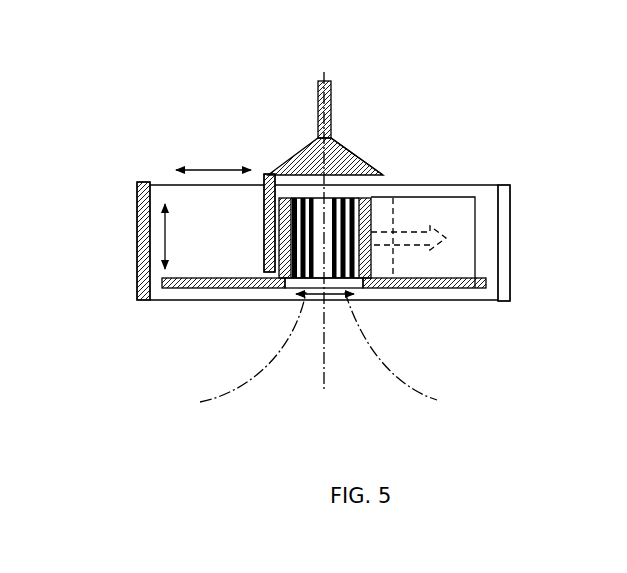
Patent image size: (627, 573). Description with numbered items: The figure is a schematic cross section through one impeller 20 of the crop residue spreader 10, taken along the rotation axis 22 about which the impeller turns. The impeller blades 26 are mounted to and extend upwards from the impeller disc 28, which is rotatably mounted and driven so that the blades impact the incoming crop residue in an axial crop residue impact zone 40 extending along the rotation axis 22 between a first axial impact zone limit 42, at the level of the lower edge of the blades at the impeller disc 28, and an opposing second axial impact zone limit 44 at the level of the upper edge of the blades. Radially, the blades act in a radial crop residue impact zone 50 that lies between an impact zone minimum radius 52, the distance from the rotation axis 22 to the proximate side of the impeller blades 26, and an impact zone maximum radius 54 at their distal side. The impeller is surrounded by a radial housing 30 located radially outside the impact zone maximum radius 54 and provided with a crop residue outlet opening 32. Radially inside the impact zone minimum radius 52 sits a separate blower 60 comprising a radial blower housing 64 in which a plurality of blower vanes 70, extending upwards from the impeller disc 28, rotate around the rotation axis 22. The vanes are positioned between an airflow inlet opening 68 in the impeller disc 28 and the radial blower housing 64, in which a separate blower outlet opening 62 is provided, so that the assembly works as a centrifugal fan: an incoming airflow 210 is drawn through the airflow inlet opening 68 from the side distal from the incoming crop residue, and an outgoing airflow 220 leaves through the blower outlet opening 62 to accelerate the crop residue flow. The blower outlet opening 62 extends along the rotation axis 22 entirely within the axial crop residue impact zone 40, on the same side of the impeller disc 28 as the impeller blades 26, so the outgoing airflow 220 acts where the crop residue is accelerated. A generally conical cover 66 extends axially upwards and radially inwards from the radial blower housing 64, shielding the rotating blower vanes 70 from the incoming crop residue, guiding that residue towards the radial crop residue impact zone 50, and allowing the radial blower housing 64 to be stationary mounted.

The crop residue spreader 10 is at (443, 124).
The impeller 20 is at (192, 291).
The rotation axis 22 is at (327, 376).
The impeller blade 26 is at (467, 266).
The impeller disc 28 is at (255, 290).
The radial housing 30 is at (499, 177).
The crop residue outlet opening 32 is at (519, 235).
The axial crop residue impact zone 40 is at (163, 228).
The first axial impact zone limit 42 is at (156, 278).
The second axial impact zone limit 44 is at (156, 203).
The radial crop residue impact zone 50 is at (227, 168).
The impact zone minimum radius 52 is at (252, 161).
The impact zone maximum radius 54 is at (175, 161).
The blower 60 is at (347, 131).
The blower outlet opening 62 is at (405, 216).
The radial blower housing 64 is at (273, 185).
The cover 66 is at (355, 160).
The airflow inlet opening 68 is at (310, 294).
The blower vane 70 is at (283, 255).
The incoming airflow 210 is at (263, 372).
The outgoing airflow 220 is at (413, 197).